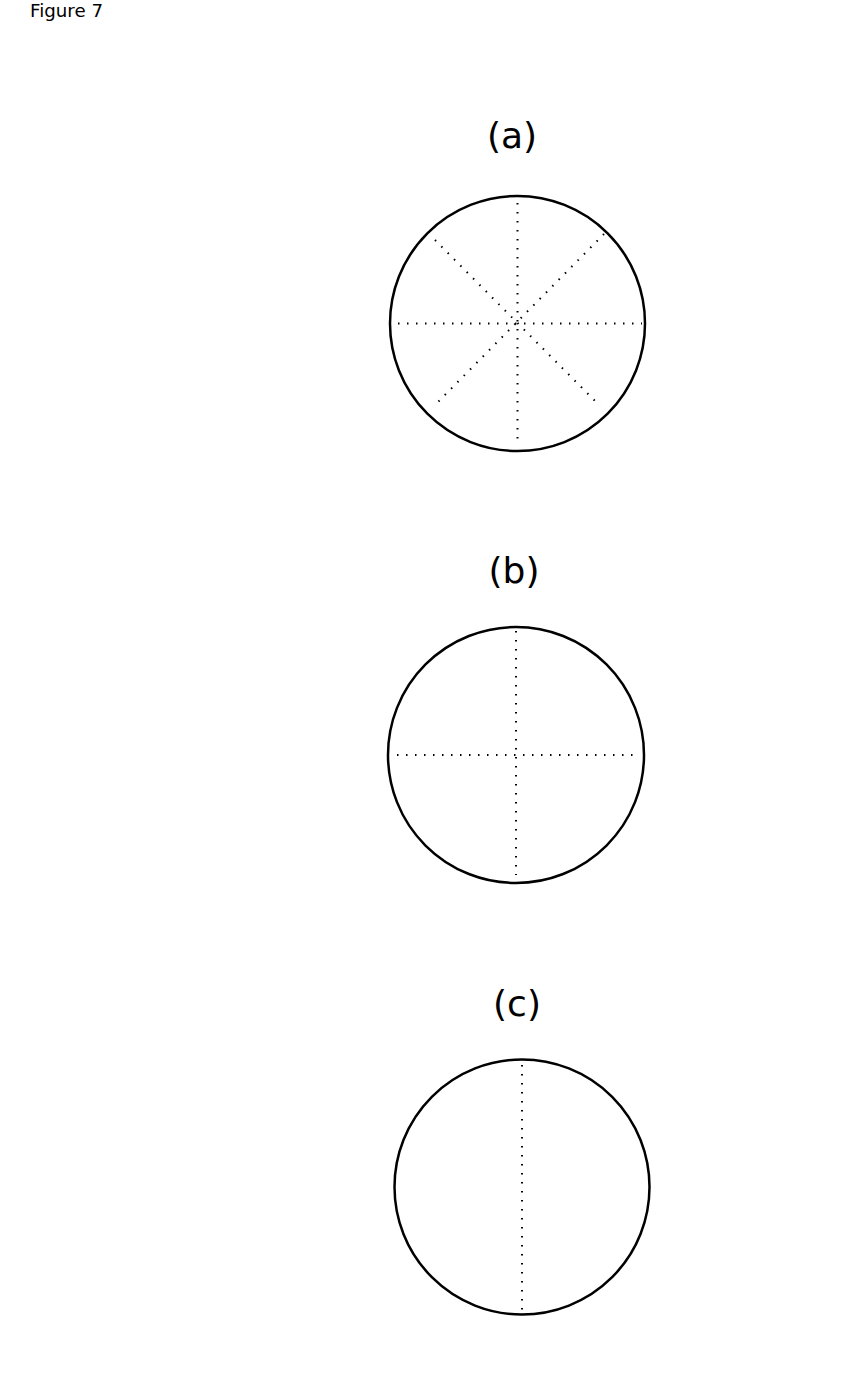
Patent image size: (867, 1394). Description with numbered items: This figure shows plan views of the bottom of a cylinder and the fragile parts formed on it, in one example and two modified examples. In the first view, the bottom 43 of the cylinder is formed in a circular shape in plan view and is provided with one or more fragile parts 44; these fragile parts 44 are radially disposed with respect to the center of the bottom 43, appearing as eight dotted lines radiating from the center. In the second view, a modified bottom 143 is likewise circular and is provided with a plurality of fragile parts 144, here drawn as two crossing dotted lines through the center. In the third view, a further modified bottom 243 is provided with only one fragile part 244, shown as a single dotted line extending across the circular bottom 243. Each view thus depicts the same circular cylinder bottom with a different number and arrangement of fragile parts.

The bottom 43 is at (405, 264).
The fragile parts 44 is at (600, 322).
The bottom 143 is at (410, 683).
The fragile parts 144 is at (590, 752).
The bottom 243 is at (417, 1117).
The fragile part 244 is at (522, 1130).